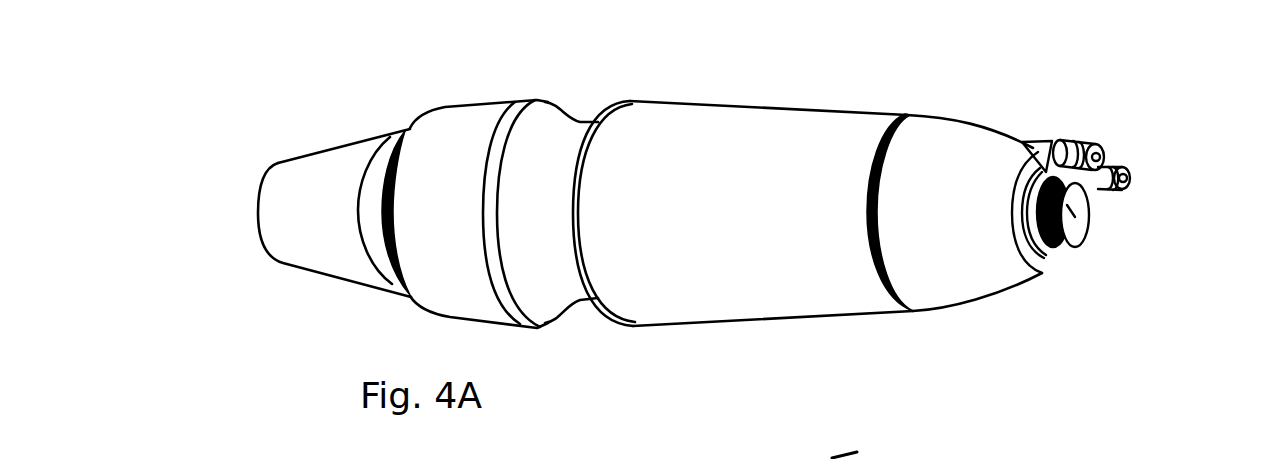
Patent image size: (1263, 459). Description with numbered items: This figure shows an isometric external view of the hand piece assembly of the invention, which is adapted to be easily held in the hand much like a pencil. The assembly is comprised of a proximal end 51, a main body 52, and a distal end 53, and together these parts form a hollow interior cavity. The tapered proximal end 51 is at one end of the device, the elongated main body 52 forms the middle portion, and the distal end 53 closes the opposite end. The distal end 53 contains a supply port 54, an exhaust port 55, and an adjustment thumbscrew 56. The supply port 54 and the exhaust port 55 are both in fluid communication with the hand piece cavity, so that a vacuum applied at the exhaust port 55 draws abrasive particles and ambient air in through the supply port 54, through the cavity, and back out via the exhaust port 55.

The proximal end 51 is at (333, 275).
The main body 52 is at (807, 318).
The distal end 53 is at (957, 312).
The supply port 54 is at (1082, 140).
The exhaust port 55 is at (1117, 162).
The adjustment thumbscrew 56 is at (1090, 230).